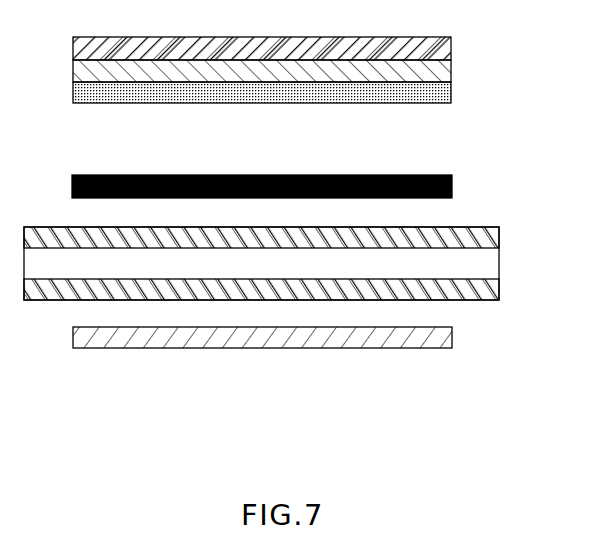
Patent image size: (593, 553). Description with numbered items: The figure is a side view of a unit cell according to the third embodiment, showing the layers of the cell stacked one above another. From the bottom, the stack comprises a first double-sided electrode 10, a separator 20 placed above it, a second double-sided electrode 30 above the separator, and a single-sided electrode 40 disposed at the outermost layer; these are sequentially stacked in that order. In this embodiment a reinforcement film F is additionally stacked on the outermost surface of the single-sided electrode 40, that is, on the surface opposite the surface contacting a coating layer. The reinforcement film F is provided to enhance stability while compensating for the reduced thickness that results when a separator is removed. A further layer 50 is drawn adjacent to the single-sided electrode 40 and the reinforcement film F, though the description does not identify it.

The reinforcement film F is at (452, 44).
The single-sided electrode 40 is at (452, 67).
The release layer 50 is at (452, 90).
The second double-sided electrode 30 is at (453, 185).
The separator 20 is at (500, 262).
The first double-sided electrode 10 is at (453, 336).